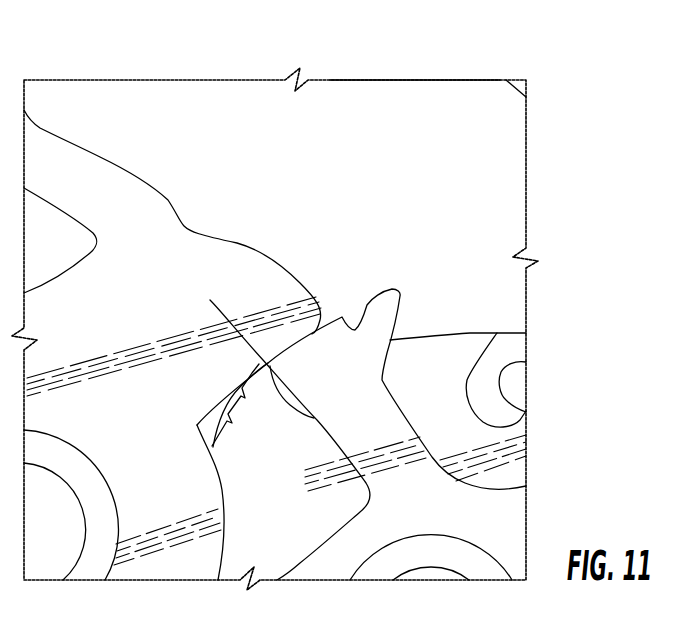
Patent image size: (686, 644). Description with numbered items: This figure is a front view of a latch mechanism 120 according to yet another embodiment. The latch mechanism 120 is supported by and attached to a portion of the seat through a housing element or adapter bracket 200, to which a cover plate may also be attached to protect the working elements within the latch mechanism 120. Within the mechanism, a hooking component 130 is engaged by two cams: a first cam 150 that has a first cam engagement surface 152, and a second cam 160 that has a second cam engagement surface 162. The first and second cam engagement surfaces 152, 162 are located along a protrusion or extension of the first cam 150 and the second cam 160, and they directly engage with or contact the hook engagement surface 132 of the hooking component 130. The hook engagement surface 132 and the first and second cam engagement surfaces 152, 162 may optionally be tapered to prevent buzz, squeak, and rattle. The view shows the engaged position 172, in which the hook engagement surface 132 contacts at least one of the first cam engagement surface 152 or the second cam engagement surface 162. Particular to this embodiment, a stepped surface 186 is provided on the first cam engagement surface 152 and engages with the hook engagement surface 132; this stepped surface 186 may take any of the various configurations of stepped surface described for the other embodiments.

The latch mechanism 120 is at (466, 66).
The hooking component 130 is at (145, 581).
The hook engagement surface 132 is at (210, 300).
The first cam 150 is at (527, 455).
The first cam engagement surface 152 is at (314, 418).
The second cam 160 is at (529, 546).
The second cam engagement surface 162 is at (360, 322).
The engaged position 172 is at (376, 73).
The stepped surface 186 is at (197, 437).
The adapter bracket 200 is at (215, 113).